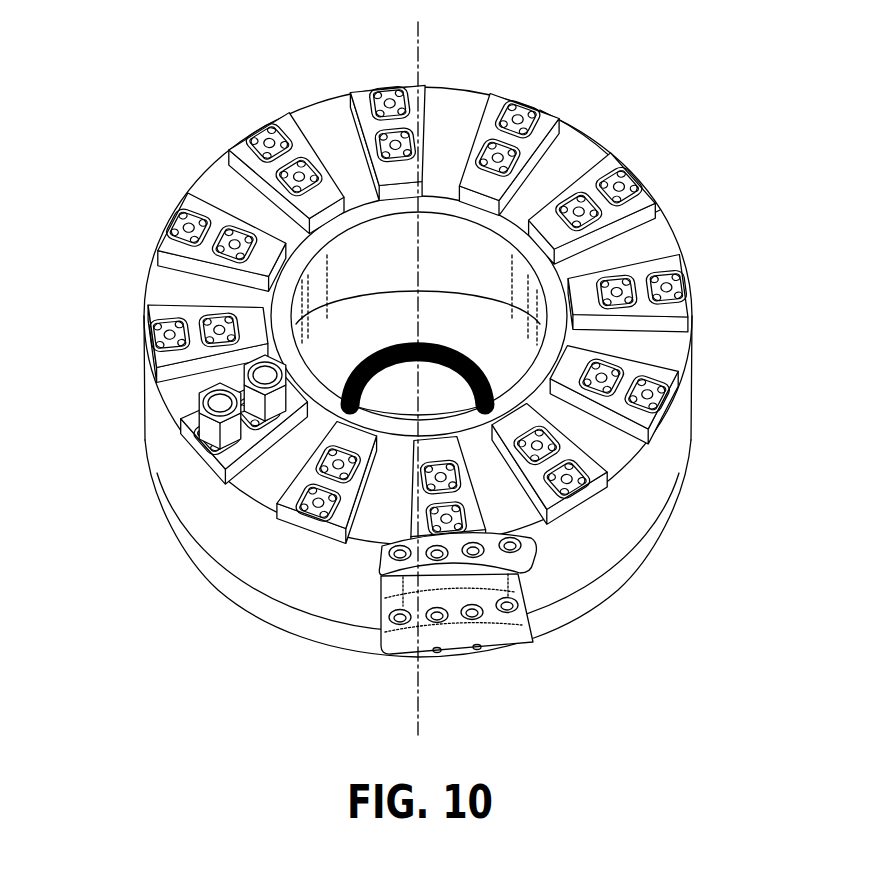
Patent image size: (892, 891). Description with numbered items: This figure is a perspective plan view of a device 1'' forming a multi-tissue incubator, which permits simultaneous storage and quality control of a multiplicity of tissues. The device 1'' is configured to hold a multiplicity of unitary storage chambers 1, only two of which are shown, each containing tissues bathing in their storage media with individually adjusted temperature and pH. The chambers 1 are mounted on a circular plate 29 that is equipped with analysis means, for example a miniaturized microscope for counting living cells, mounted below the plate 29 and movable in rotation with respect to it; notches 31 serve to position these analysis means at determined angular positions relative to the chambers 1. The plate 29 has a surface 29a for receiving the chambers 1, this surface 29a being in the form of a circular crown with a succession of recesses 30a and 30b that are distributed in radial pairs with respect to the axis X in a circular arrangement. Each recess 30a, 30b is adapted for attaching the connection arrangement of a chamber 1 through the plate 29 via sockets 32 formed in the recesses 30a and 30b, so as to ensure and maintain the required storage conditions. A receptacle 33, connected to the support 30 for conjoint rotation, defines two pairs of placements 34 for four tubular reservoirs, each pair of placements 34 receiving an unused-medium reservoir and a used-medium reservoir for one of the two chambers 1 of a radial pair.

The unitary storage chamber 1 is at (188, 400).
The device 1'' is at (405, 395).
The circular plate 29 is at (593, 128).
The receiving surface 29a is at (648, 240).
The support 30 is at (650, 574).
The recess 30a is at (235, 228).
The recess 30b is at (184, 220).
The notches 31 is at (530, 383).
The sockets 32 is at (394, 100).
The receptacle 33 is at (397, 668).
The placements 34 is at (510, 619).
The axis X is at (428, 47).